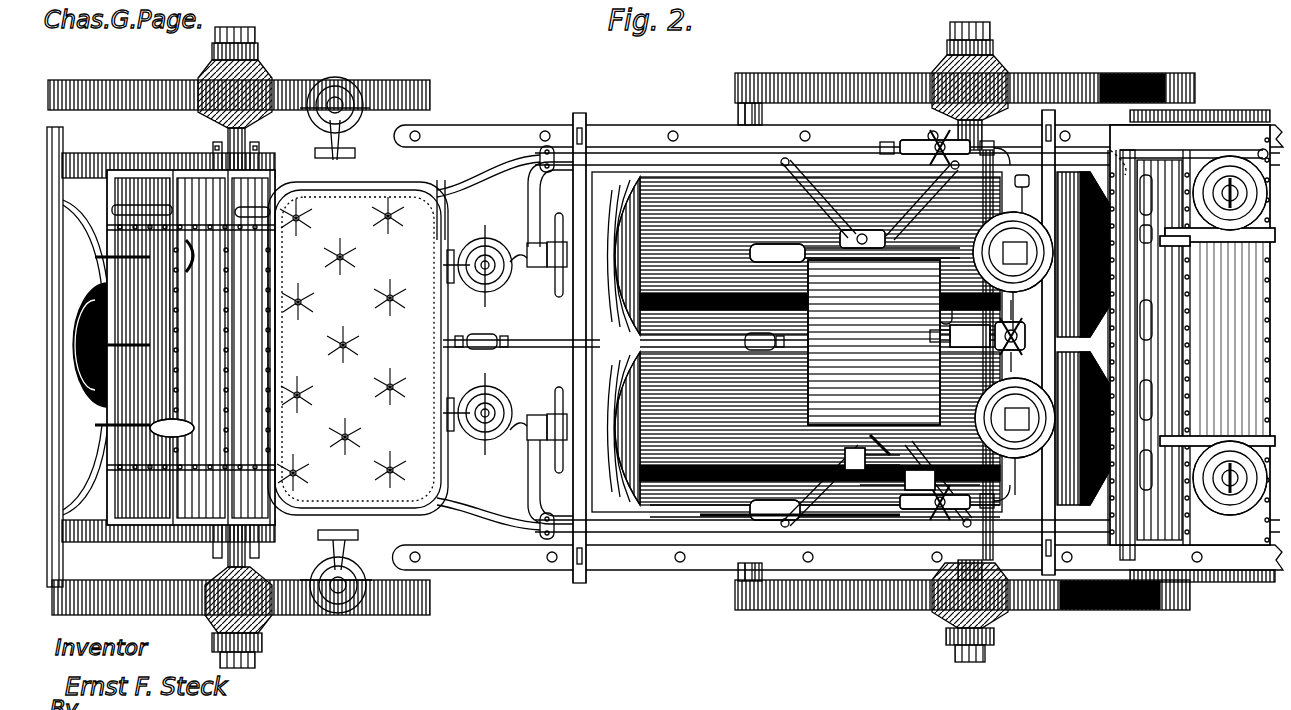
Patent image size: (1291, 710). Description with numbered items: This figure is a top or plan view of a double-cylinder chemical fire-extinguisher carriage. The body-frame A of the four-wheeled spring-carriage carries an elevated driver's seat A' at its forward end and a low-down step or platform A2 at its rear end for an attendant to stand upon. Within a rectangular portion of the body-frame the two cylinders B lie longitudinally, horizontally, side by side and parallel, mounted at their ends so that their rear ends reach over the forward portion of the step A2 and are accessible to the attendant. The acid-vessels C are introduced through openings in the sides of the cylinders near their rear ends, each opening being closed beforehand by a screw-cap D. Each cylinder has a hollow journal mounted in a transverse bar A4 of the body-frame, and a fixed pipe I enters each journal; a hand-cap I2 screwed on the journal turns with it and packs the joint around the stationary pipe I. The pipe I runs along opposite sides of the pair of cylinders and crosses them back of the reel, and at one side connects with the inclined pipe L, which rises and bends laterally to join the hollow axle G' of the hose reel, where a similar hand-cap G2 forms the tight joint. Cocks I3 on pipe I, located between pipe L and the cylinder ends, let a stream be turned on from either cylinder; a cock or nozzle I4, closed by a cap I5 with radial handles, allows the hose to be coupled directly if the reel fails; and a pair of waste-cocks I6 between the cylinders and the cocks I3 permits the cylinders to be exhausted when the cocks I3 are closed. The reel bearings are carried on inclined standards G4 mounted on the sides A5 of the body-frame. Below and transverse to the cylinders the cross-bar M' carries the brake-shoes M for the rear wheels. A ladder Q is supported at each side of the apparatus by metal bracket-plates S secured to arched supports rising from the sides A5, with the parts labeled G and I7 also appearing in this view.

The body-frame A is at (858, 317).
The driver's seat A' is at (450, 199).
The step or platform A2 is at (1232, 290).
The transverse bar A4 is at (578, 322).
The sides of the body-frame A5 is at (660, 532).
The cylinders B is at (804, 341).
The acid-vessels C is at (1262, 190).
The screw-cap D is at (1014, 335).
The supply pipe G is at (825, 369).
The hollow axle of the reel G' is at (874, 342).
The hand-cap G2 is at (788, 158).
The inclined standards G4 is at (876, 484).
The pipe I is at (477, 336).
The hand-cap I2 is at (556, 388).
The cocks I3 is at (940, 142).
The cock or nozzle I4 is at (970, 330).
The cap I5 is at (1012, 417).
The waste-cocks I6 is at (900, 195).
The valve lever I7 is at (1163, 236).
The inclined pipe L is at (801, 536).
The brake-shoes M is at (621, 345).
The cross-bar M' is at (729, 341).
The ladder Q is at (837, 346).
The bracket-plates S is at (813, 342).